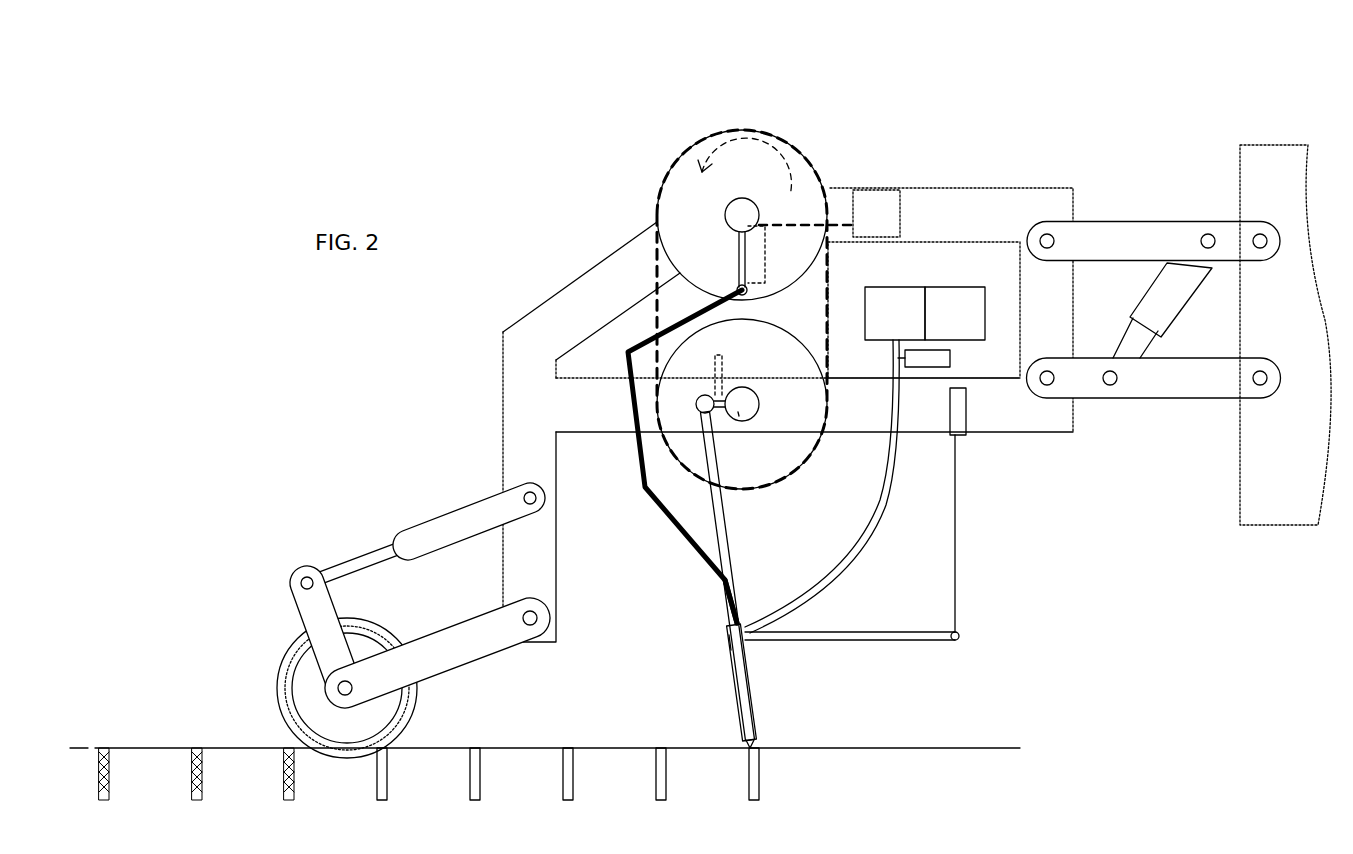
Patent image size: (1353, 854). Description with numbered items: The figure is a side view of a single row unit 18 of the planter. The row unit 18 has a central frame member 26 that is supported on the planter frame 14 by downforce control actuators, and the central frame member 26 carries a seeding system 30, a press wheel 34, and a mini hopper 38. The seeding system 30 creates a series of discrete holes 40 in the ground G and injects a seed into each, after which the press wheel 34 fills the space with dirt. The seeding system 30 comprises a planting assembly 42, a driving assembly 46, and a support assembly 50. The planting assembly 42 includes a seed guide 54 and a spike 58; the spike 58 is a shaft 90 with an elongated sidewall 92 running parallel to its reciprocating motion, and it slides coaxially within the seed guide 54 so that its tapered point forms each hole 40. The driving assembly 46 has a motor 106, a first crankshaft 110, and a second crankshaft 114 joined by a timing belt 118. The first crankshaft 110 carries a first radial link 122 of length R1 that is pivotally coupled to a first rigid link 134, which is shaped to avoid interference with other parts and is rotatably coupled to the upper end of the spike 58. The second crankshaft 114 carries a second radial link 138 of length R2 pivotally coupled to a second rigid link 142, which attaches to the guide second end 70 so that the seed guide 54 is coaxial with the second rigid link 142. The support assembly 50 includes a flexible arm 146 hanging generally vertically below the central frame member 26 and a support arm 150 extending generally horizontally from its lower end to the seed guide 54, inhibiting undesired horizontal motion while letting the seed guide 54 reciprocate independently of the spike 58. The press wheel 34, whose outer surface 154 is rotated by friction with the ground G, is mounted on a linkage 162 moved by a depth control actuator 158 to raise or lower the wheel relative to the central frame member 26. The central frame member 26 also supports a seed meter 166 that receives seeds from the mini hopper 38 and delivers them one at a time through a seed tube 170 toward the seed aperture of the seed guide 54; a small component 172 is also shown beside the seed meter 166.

The planter frame 14 is at (1275, 145).
The row unit 18 is at (513, 78).
The central frame member 26 is at (1058, 185).
The seeding system 30 is at (643, 170).
The press wheel 34 is at (300, 680).
The mini hopper 38 is at (972, 310).
The hole 40 is at (109, 785).
The planting assembly 42 is at (675, 665).
The driving assembly 46 is at (836, 188).
The support assembly 50 is at (990, 550).
The seed guide 54 is at (752, 690).
The spike 58 is at (755, 738).
The guide second end 70 is at (705, 440).
The shaft 90 is at (735, 665).
The sidewall 92 is at (740, 708).
The motor 106 is at (872, 190).
The first crankshaft 110 is at (744, 208).
The second crankshaft 114 is at (758, 405).
The timing belt 118 is at (645, 270).
The first radial link 122 is at (740, 262).
The first rigid link 134 is at (640, 460).
The second radial link 138 is at (718, 412).
The second rigid link 142 is at (727, 555).
The flexible arm 146 is at (965, 540).
The support arm 150 is at (862, 632).
The outer surface 154 is at (297, 640).
The depth control actuator 158 is at (433, 540).
The linkage 162 is at (445, 648).
The seed meter 166 is at (918, 300).
The seed tube 170 is at (865, 548).
The valve 172 is at (950, 362).
The ground G is at (150, 748).
The first length R1 is at (768, 255).
The second length R2 is at (720, 352).